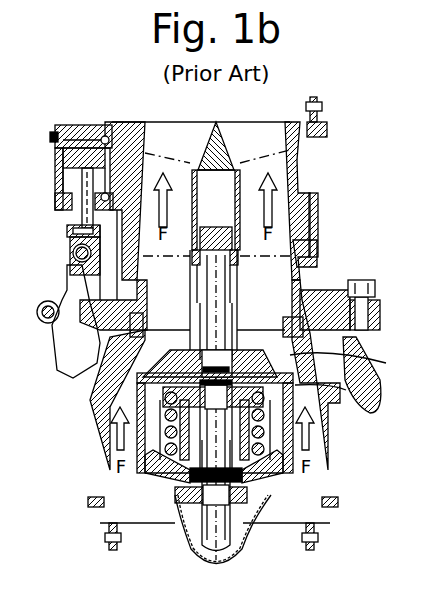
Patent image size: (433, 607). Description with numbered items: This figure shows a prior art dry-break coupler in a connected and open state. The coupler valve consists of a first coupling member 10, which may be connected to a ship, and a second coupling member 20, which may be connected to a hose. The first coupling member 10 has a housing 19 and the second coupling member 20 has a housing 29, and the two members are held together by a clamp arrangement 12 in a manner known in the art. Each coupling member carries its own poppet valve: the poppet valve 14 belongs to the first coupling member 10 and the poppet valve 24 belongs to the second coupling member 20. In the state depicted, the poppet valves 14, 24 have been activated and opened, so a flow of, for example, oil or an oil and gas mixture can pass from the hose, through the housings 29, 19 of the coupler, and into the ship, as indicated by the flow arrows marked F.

The first coupling member 10 is at (306, 170).
The housing 19 is at (300, 273).
The poppet valve 14 is at (353, 328).
The poppet valve 24 is at (378, 402).
The second coupling member 20 is at (336, 472).
The housing 29 is at (100, 483).
The clamp arrangement 12 is at (54, 381).